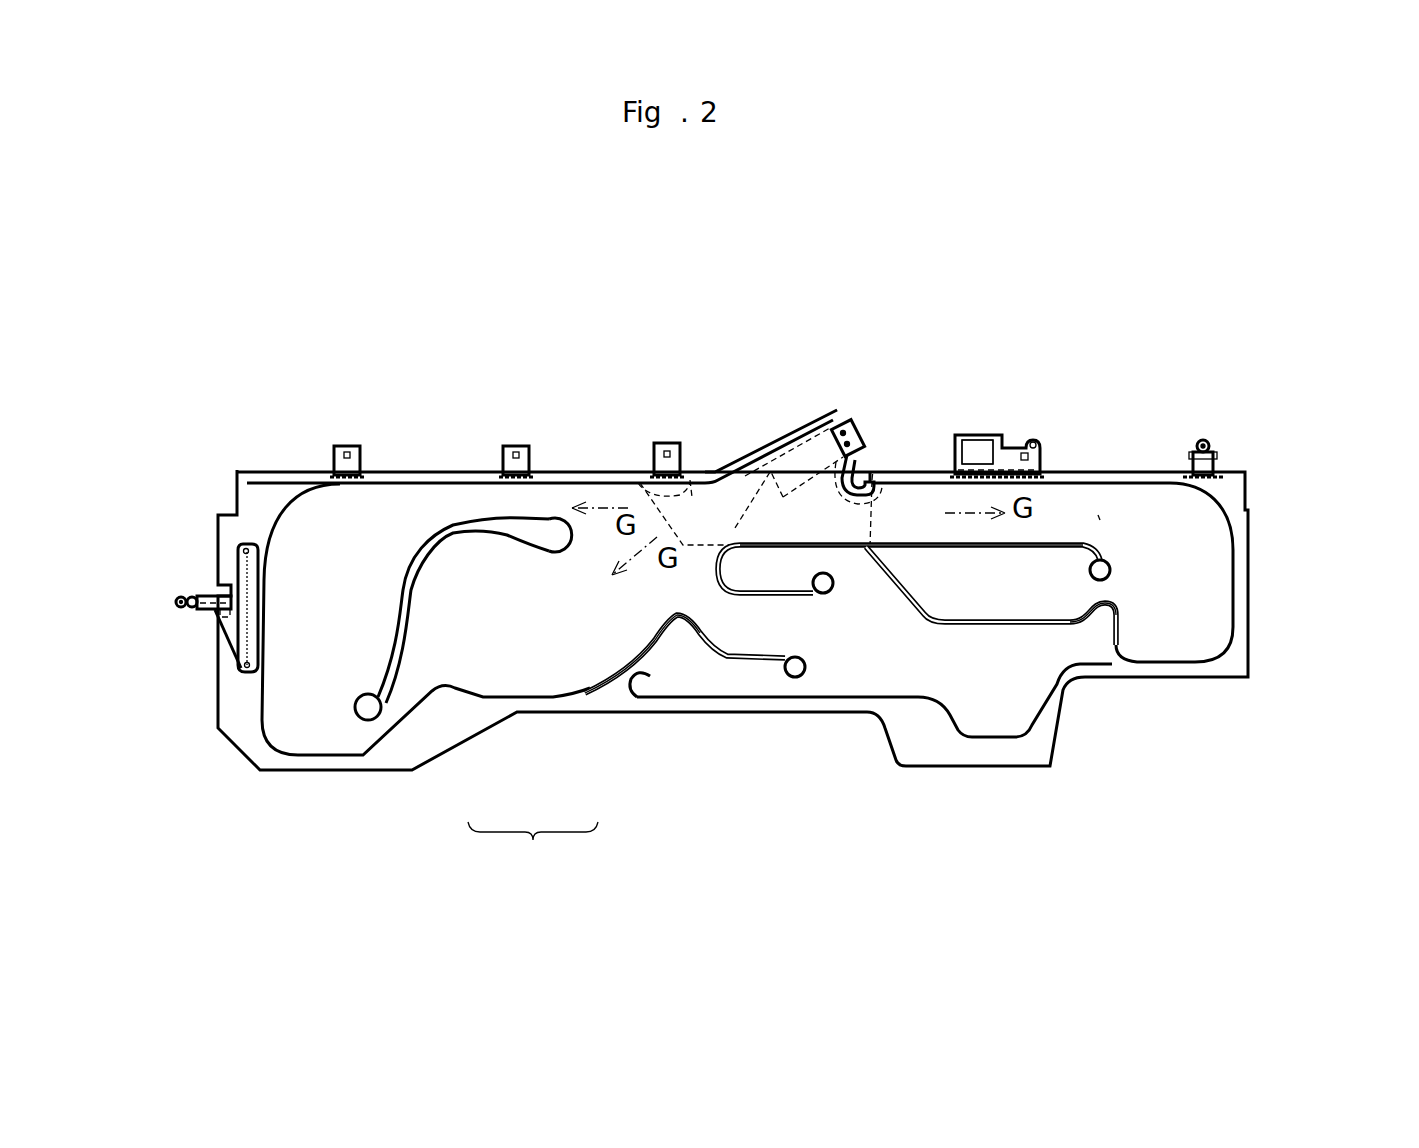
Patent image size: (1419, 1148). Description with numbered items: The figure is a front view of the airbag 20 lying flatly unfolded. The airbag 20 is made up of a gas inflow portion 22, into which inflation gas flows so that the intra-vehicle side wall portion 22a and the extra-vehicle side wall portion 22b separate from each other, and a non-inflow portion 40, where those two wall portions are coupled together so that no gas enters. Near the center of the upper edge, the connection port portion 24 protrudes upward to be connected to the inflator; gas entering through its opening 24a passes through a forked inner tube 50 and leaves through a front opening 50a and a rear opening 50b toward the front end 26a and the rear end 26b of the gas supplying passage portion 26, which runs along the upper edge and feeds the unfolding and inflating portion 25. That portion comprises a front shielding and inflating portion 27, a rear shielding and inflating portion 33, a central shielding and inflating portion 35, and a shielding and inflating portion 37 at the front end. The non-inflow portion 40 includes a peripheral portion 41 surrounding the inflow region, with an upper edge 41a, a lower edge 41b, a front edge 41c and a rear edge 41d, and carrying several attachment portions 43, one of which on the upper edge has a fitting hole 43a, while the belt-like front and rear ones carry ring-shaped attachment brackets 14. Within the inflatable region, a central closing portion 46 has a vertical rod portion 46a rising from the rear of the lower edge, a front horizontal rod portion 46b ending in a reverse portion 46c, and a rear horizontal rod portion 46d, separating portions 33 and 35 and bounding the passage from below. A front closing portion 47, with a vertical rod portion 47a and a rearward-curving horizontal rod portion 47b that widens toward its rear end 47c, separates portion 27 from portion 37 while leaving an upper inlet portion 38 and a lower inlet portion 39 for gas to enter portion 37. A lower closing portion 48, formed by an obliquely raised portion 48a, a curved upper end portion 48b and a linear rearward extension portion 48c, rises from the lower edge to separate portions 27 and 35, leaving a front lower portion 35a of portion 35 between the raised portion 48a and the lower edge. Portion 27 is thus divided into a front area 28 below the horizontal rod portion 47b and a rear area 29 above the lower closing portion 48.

The airbag 20 is at (288, 278).
The non-inflow portion 40 is at (400, 448).
The peripheral portion 41 is at (740, 582).
The upper edge 41a is at (436, 480).
The lower edge 41b is at (843, 712).
The front edge 41c is at (226, 537).
The rear edge 41d is at (1248, 590).
The attachment bracket 14 is at (183, 597).
The gas inflow portion 22 is at (300, 733).
The intra-vehicle side wall portion 22a is at (275, 705).
The extra-vehicle side wall portion 22b is at (277, 723).
The connection port portion 24 is at (806, 455).
The opening 24a is at (848, 402).
The unfolding and inflating portion 25 is at (932, 488).
The gas supplying passage portion 26 is at (1051, 494).
The front end 26a is at (783, 497).
The rear end 26b is at (1098, 515).
The shielding and inflating portion 27 is at (533, 847).
The front area 28 is at (483, 647).
The rear area 29 is at (613, 602).
The shielding and inflating portion 33 is at (1187, 552).
The shielding and inflating portion 35 is at (987, 677).
The front lower portion 35a is at (647, 682).
The shielding and inflating portion 37 is at (318, 560).
The upper inlet portion 38 is at (495, 510).
The lower inlet portion 39 is at (365, 735).
The attachment portion 43 is at (348, 446).
The fitting hole 43a is at (978, 438).
The central closing portion 46 is at (1141, 639).
The vertical rod portion 46a is at (1112, 625).
The front horizontal rod portion 46b is at (832, 553).
The reverse portion 46c is at (807, 595).
The rear horizontal rod portion 46d is at (985, 550).
The front closing portion 47 is at (309, 741).
The vertical rod portion 47a is at (402, 655).
The horizontal rod portion 47b is at (447, 543).
The rear end 47c is at (547, 533).
The lower closing portion 48 is at (773, 660).
The raised portion 48a is at (650, 652).
The upper end portion 48b is at (677, 620).
The rearward extension portion 48c is at (795, 667).
The inner tube 50 is at (738, 497).
The front opening 50a is at (690, 480).
The rear opening 50b is at (873, 480).